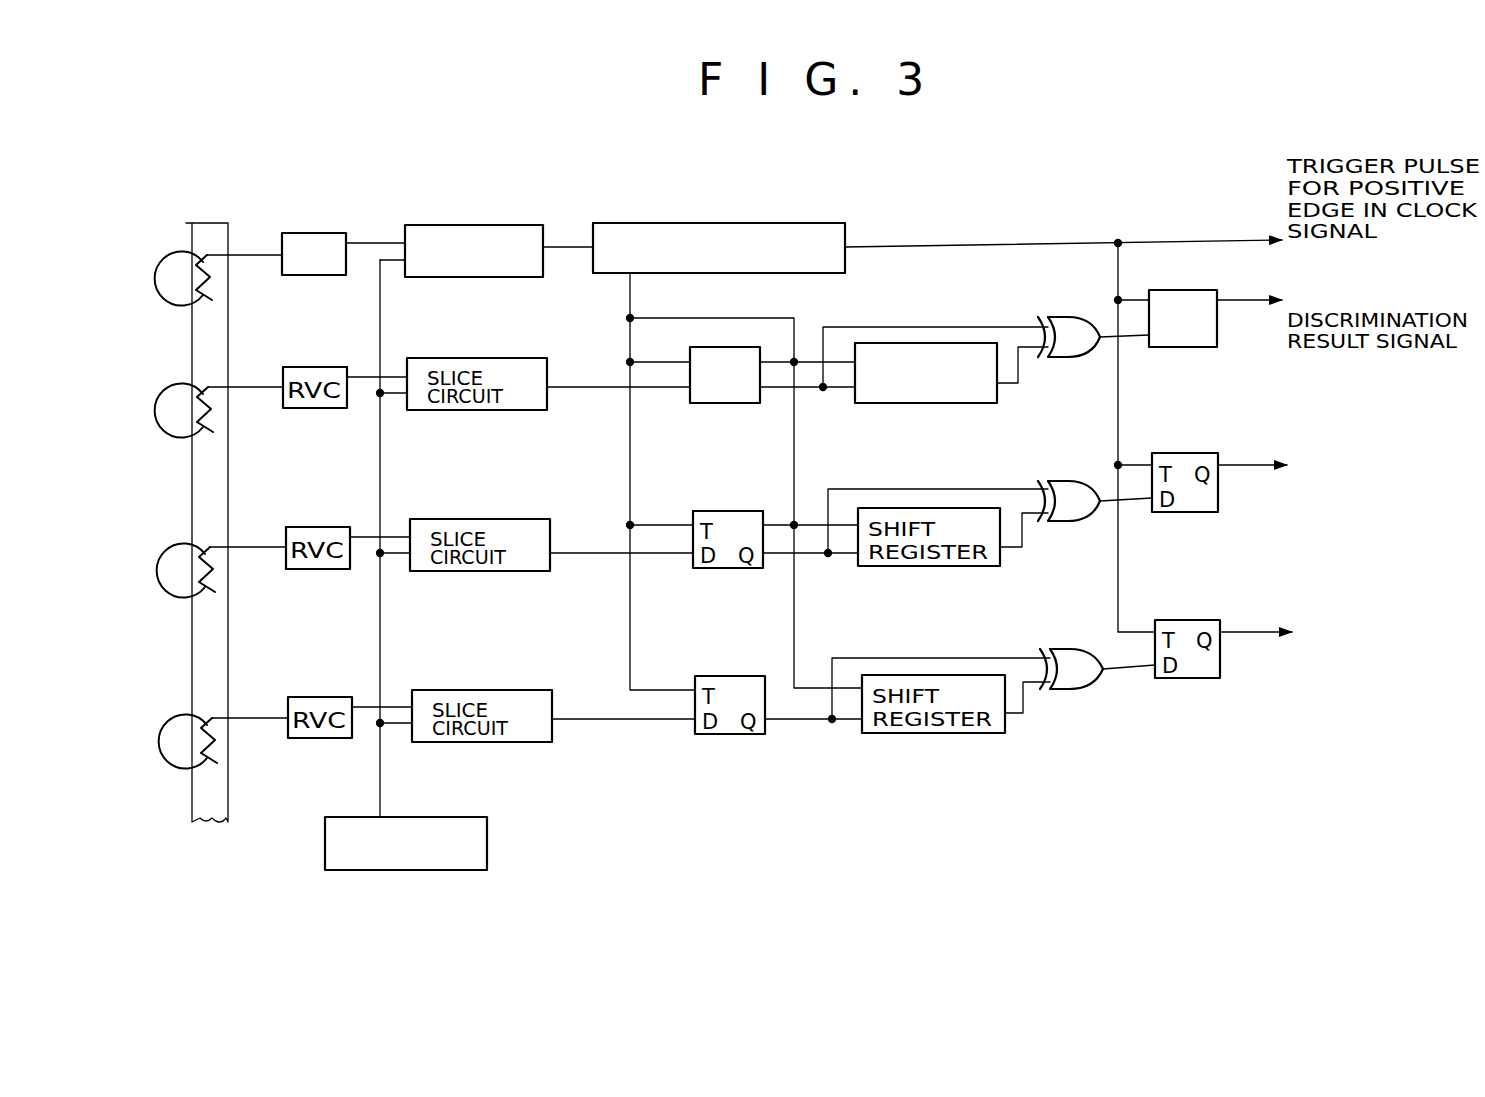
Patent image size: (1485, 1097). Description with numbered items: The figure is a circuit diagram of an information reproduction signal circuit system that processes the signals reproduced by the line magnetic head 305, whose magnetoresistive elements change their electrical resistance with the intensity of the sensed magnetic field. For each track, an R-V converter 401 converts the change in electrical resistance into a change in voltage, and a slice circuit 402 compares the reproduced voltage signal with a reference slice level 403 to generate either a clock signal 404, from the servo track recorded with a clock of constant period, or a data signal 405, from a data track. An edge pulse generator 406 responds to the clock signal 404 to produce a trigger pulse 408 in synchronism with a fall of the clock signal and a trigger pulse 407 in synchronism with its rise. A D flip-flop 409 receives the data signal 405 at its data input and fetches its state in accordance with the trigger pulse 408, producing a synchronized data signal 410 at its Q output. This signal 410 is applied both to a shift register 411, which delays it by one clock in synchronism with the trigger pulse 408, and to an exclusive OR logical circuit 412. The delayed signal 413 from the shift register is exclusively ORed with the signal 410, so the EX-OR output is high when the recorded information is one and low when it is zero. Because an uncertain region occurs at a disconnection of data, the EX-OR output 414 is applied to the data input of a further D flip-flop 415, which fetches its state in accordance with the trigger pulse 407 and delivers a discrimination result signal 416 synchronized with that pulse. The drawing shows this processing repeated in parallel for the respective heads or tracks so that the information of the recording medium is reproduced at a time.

The line magnetic head 305 is at (208, 223).
The R-V converter 401 is at (322, 233).
The slice circuit 402 is at (507, 225).
The reference slice level 403 is at (487, 843).
The clock signal 404 is at (578, 247).
The data signal 405 is at (582, 387).
The edge pulse generator 406 is at (772, 223).
The trigger pulse 407 is at (948, 244).
The trigger pulse 408 is at (718, 318).
The D flip-flop 409 is at (720, 403).
The synchronized data signal 410 is at (912, 327).
The shift register 411 is at (900, 403).
The exclusive OR logical circuit 412 is at (1068, 317).
The delayed signal 413 is at (1010, 385).
The exclusive OR output line 414 is at (1133, 337).
The D flip-flop 415 is at (1180, 270).
The discrimination result signal 416 is at (1250, 300).